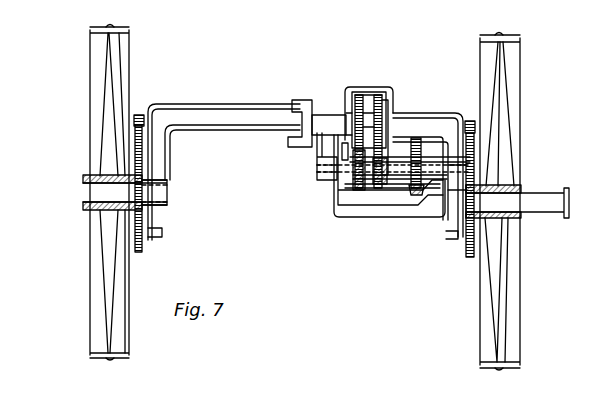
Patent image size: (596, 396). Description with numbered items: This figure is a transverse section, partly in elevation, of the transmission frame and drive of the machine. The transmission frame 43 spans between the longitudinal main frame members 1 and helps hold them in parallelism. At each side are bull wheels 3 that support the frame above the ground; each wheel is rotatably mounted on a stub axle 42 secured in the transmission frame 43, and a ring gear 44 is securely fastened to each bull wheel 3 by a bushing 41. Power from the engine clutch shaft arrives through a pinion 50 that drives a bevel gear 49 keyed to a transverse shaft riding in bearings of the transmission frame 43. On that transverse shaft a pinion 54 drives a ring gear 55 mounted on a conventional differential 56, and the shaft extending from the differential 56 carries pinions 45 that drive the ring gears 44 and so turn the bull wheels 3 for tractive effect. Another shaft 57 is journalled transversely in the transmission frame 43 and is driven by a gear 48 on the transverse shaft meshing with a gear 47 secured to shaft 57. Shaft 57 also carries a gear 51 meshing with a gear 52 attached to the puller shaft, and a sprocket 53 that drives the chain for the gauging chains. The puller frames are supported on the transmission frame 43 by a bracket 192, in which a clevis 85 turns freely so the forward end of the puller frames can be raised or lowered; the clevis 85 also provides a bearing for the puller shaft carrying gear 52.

The main frame member 1 is at (155, 228).
The bull wheel 3 is at (97, 257).
The bushing 41 is at (92, 190).
The stub axle 42 is at (88, 199).
The transmission frame 43 is at (157, 145).
The ring gear 44 is at (137, 163).
The pinion 45 is at (140, 115).
The gear 47 is at (421, 137).
The gear 48 is at (418, 196).
The bevel gear 49 is at (352, 196).
The pinion 50 is at (361, 193).
The gear 51 is at (348, 173).
The gear 52 is at (351, 87).
The sprocket 53 is at (334, 153).
The pinion 54 is at (376, 194).
The ring gear 55 is at (390, 96).
The differential 56 is at (370, 95).
The shaft 57 is at (392, 192).
The clevis 85 is at (293, 102).
The bracket 192 is at (328, 122).